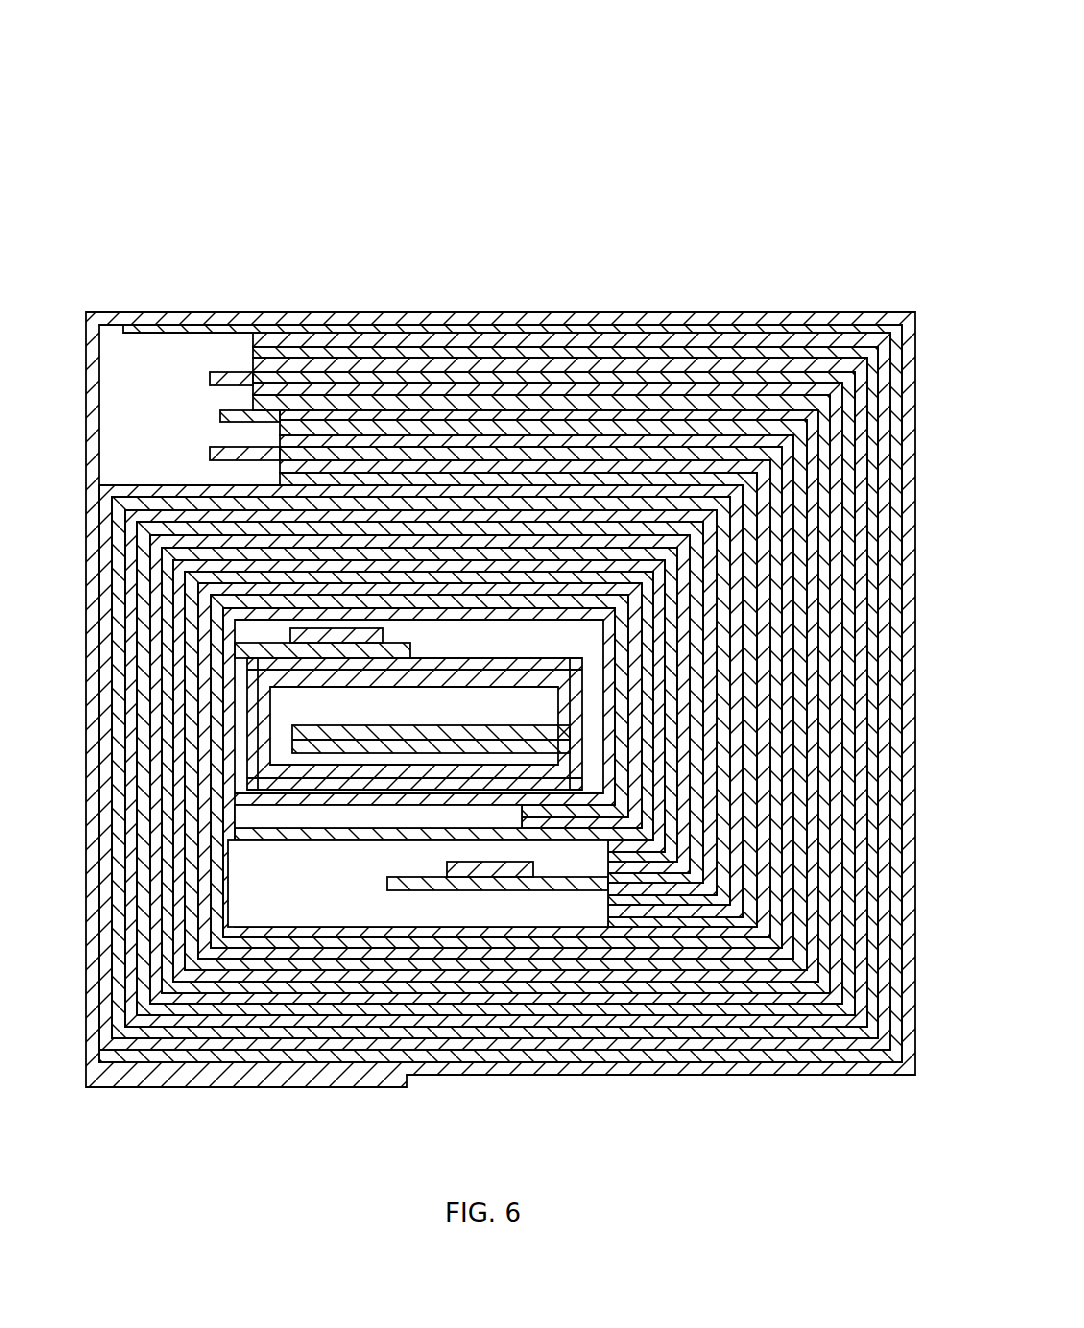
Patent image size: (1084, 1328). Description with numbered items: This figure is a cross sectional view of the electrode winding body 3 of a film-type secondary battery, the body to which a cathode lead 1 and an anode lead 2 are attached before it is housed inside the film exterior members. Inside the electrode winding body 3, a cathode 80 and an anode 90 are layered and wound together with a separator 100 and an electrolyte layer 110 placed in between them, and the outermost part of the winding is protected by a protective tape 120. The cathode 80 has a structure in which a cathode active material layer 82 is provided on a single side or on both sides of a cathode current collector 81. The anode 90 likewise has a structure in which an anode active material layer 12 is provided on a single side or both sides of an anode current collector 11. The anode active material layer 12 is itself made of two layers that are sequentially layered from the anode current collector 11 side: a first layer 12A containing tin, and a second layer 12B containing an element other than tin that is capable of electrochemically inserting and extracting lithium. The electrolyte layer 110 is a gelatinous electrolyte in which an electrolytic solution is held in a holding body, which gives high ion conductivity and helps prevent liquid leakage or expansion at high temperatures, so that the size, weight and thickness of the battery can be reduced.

The cathode lead 1 is at (312, 637).
The anode lead 2 is at (485, 870).
The electrode winding body 3 is at (500, 573).
The anode current collector 11 is at (500, 610).
The anode active material layer 12 is at (496, 547).
The first layer 12A is at (540, 485).
The second layer 12B is at (598, 475).
The cathode 80 is at (289, 290).
The cathode current collector 81 is at (232, 417).
The cathode active material layer 82 is at (358, 430).
The anode 90 is at (500, 583).
The separator 100 is at (690, 380).
The electrolyte layer 110 is at (758, 462).
The protective tape 120 is at (877, 317).